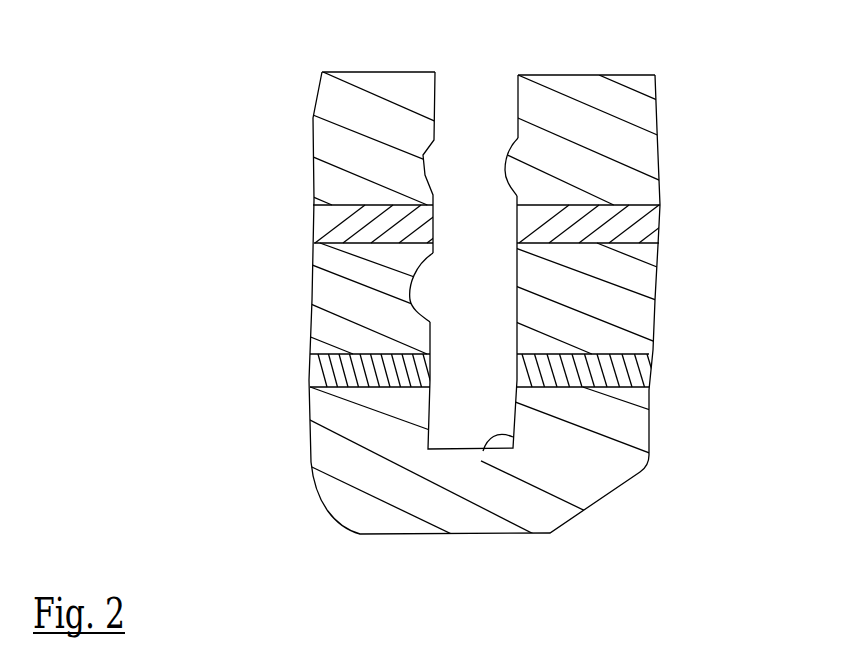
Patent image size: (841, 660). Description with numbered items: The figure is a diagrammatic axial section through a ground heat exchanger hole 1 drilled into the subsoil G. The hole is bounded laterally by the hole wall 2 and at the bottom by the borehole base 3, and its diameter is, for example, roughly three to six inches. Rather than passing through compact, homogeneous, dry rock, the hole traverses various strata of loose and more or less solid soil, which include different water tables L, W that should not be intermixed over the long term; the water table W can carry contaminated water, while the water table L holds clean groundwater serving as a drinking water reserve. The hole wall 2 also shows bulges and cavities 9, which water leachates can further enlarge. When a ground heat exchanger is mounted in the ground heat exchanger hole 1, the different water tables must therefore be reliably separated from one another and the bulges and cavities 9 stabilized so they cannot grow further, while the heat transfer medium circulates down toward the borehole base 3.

The ground heat exchanger hole 1 is at (541, 12).
The hole wall 2 is at (520, 147).
The borehole base 3 is at (513, 437).
The bulges and cavities 9 is at (410, 310).
The subsoil G is at (322, 72).
The water table W is at (318, 212).
The water table L is at (318, 360).